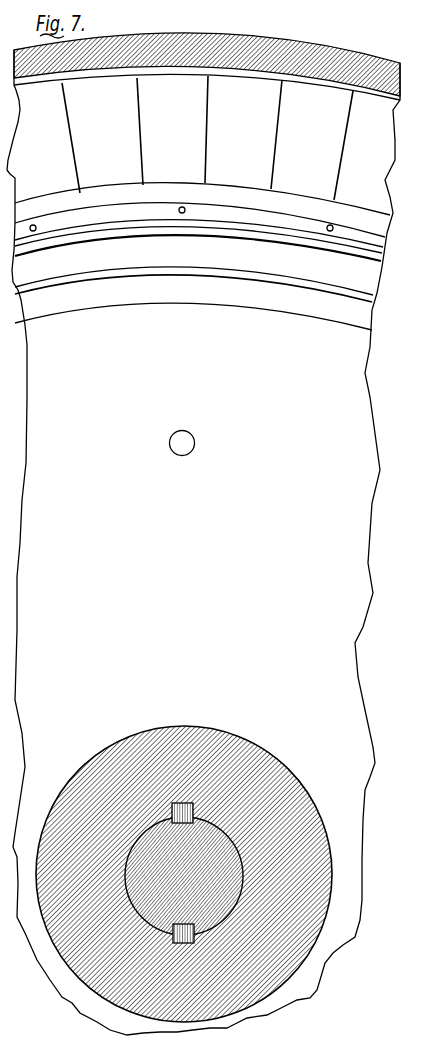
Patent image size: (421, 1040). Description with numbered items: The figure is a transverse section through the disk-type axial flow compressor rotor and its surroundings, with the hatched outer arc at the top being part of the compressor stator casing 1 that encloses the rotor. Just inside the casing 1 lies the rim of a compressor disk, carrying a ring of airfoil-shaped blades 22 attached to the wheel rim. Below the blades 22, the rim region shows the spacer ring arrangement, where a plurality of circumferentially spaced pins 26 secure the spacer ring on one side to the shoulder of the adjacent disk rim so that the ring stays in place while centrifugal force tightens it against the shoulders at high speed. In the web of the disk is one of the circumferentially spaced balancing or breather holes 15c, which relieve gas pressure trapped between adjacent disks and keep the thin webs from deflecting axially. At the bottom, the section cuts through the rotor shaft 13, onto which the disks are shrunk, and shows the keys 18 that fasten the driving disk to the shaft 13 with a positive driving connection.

The compressor stator casing 1 is at (0, 578).
The blades 22 is at (216, 118).
The pins 26 is at (36, 230).
The balancing or breather holes 15c is at (199, 435).
The shaft 13 is at (140, 835).
The keys 18 is at (188, 803).